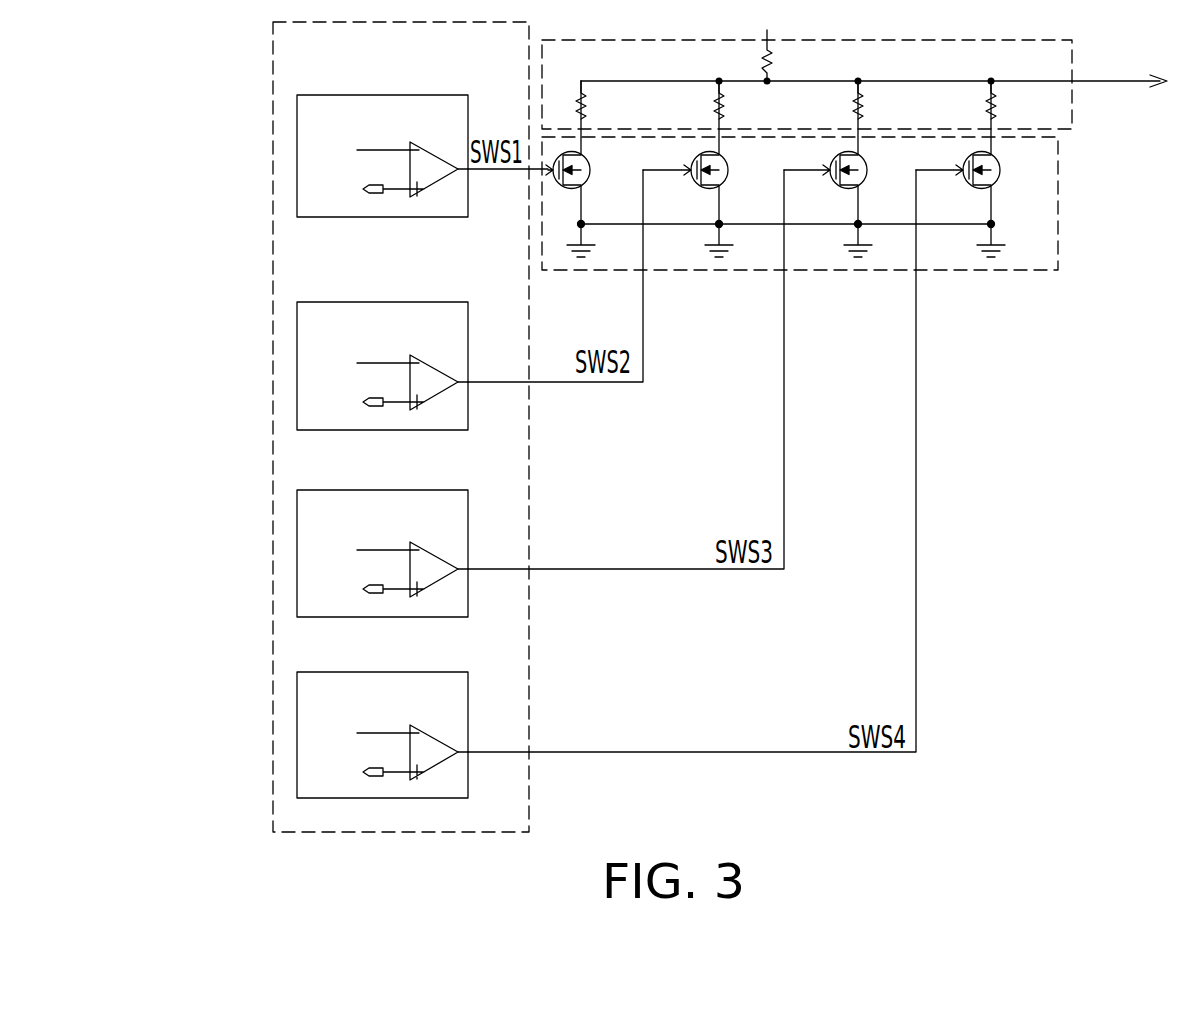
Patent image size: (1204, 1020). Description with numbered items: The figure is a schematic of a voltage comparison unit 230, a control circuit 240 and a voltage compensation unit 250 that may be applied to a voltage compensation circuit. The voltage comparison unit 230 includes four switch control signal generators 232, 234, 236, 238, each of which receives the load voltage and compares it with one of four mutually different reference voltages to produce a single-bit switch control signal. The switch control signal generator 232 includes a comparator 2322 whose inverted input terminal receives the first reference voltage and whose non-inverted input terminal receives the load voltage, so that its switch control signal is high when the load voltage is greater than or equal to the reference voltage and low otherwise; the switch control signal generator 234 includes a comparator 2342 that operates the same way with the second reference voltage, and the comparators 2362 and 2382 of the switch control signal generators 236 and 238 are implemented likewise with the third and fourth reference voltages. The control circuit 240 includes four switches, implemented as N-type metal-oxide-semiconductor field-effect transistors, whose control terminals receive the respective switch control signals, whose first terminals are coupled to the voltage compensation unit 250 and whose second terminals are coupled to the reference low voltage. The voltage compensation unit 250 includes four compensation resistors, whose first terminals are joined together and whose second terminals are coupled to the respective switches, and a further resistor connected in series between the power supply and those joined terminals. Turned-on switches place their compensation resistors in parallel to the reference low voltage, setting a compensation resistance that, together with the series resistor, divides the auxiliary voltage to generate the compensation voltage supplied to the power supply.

The voltage comparison unit 230 is at (268, 209).
The switch control signal generator 232 is at (338, 95).
The switch control signal generator 234 is at (336, 302).
The switch control signal generator 236 is at (336, 490).
The switch control signal generator 238 is at (336, 672).
The comparator 2322 is at (440, 149).
The comparator 2342 is at (440, 356).
The comparator 2362 is at (440, 544).
The comparator 2382 is at (440, 726).
The control circuit 240 is at (1058, 208).
The voltage compensation unit 250 is at (1072, 117).